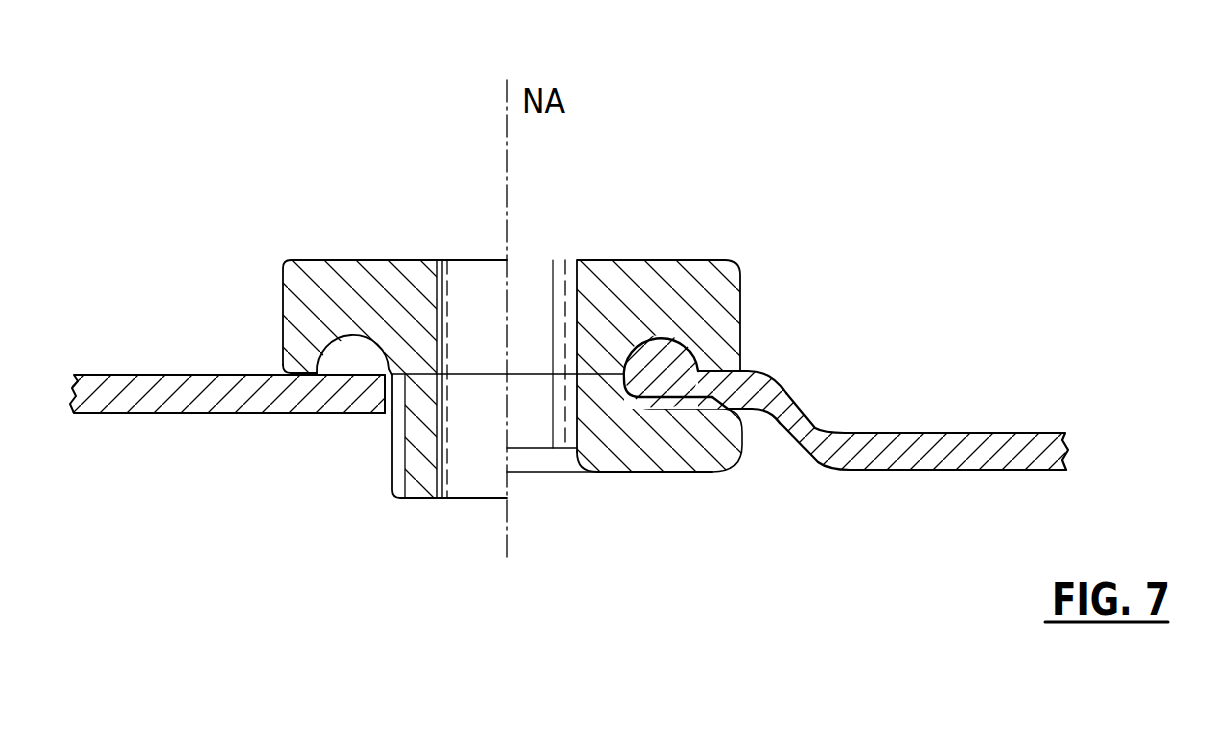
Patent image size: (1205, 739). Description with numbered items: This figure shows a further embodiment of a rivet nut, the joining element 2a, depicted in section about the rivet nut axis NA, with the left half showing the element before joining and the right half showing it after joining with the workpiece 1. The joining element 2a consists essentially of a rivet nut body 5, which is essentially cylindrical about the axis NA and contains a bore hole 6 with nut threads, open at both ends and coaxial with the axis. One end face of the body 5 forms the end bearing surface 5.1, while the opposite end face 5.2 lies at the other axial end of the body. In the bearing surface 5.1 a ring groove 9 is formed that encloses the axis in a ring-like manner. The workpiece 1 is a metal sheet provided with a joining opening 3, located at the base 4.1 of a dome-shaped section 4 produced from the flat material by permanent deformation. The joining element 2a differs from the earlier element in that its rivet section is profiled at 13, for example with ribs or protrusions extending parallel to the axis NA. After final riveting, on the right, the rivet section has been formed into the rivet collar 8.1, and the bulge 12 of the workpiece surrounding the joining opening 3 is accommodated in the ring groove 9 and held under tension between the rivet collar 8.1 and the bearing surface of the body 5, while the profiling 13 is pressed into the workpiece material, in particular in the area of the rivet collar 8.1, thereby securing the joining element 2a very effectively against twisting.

The workpiece 1 is at (883, 413).
The joining element 2a is at (353, 147).
The joining opening 3 is at (355, 414).
The dome-shaped section 4 is at (762, 360).
The base 4.1 is at (745, 387).
The rivet nut body 5 is at (645, 270).
The end bearing surface 5.1 is at (290, 366).
The opposing end face 5.2 is at (384, 259).
The bore hole 6 is at (563, 287).
The rivet collar 8.1 is at (673, 457).
The ring groove 9 is at (348, 352).
The bulge 12 is at (655, 370).
The profiling 13 is at (397, 472).